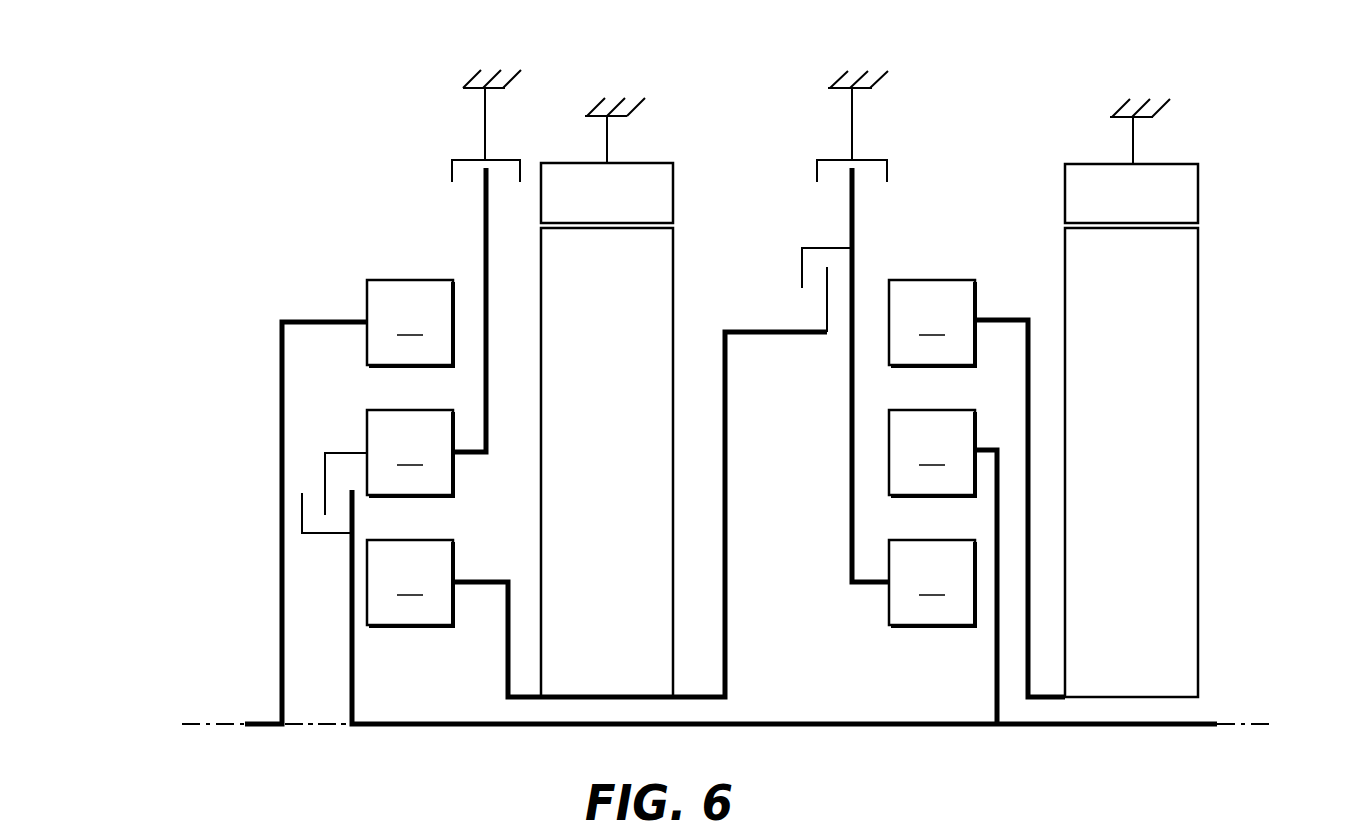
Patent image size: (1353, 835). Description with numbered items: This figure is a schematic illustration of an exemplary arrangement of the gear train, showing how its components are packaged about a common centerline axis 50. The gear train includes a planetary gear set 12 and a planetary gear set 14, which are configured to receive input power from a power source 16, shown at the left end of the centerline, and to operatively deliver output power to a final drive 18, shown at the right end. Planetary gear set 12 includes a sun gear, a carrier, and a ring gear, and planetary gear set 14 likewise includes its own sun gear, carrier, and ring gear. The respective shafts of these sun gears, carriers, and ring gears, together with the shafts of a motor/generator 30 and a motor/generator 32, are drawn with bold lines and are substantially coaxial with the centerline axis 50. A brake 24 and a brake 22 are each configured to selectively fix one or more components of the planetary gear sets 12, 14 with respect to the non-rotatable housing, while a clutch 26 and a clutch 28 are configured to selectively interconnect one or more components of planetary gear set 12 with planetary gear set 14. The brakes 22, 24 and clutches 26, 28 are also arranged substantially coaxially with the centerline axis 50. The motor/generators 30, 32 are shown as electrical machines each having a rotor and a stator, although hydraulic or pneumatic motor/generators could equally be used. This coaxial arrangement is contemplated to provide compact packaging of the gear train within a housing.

The planetary gear set 12 is at (366, 224).
The planetary gear set 14 is at (948, 232).
The power source 16 is at (141, 745).
The final drive 18 is at (1292, 775).
The brake 22 is at (817, 99).
The brake 24 is at (457, 99).
The clutch 26 is at (357, 436).
The clutch 28 is at (800, 232).
The motor/generator 30 is at (585, 99).
The motor/generator 32 is at (1105, 96).
The centerline axis 50 is at (313, 722).